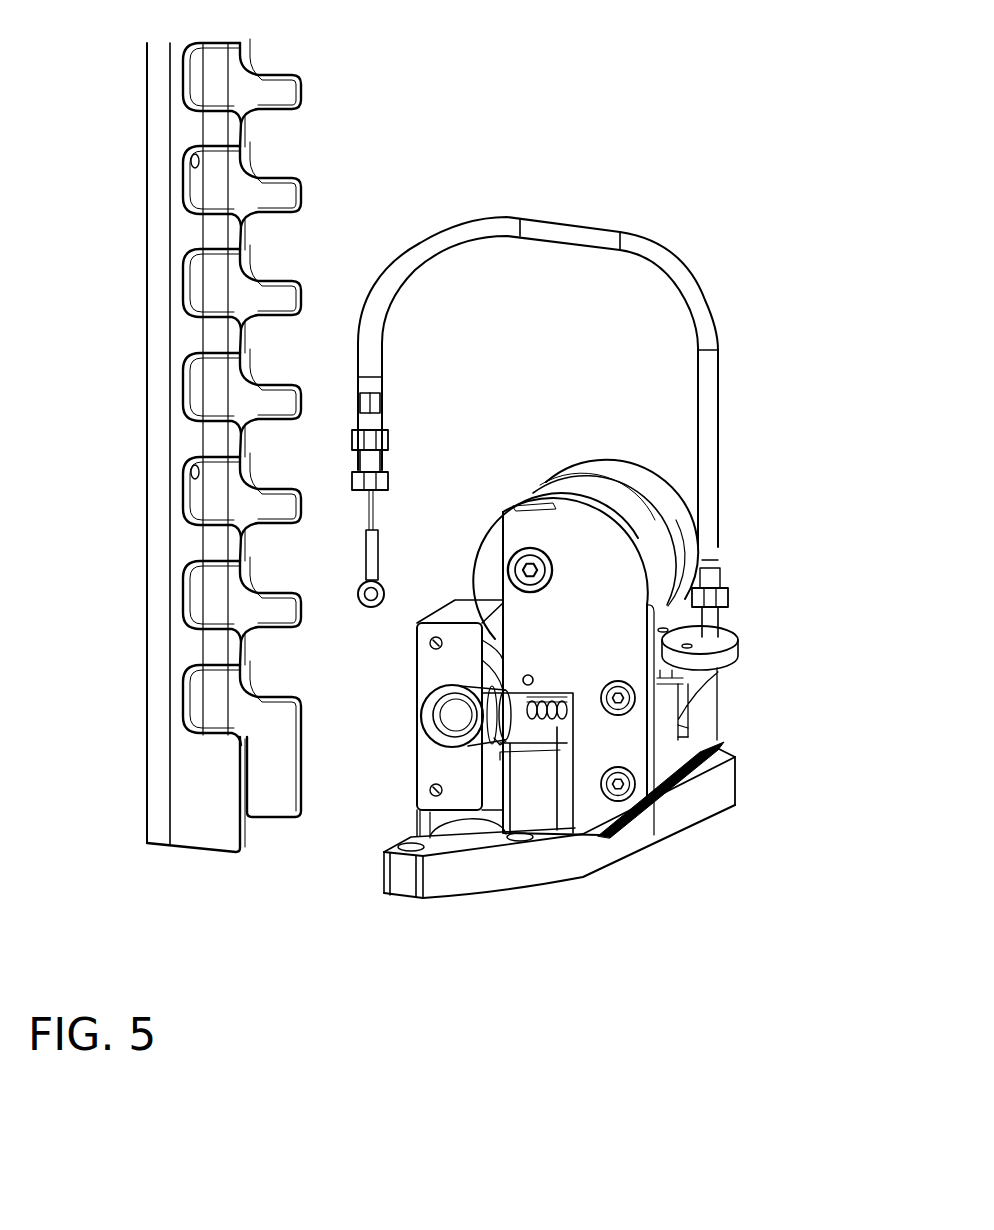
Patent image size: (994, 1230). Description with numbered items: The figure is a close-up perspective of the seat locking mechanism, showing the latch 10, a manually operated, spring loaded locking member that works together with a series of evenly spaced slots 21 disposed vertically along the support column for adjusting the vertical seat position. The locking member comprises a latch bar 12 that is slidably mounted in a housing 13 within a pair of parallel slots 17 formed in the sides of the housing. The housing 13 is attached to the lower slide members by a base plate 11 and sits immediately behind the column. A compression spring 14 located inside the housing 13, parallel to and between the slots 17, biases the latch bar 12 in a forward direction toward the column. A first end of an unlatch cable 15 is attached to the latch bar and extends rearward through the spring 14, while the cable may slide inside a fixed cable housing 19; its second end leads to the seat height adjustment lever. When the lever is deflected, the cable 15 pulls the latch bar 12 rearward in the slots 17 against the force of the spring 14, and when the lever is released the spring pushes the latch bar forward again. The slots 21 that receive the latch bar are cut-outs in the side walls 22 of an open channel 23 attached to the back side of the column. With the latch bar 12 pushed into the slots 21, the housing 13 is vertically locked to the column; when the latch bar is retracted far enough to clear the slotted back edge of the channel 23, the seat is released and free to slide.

The latch 10 is at (602, 581).
The base plate 11 is at (468, 877).
The latch bar 12 is at (445, 725).
The housing 13 is at (414, 646).
The compression spring 14 is at (568, 725).
The unlatch cable 15 is at (375, 515).
The slots 17 is at (528, 757).
The cable housing 19 is at (717, 420).
The slots 21 is at (231, 443).
The side walls 22 is at (250, 720).
The open channel 23 is at (147, 318).